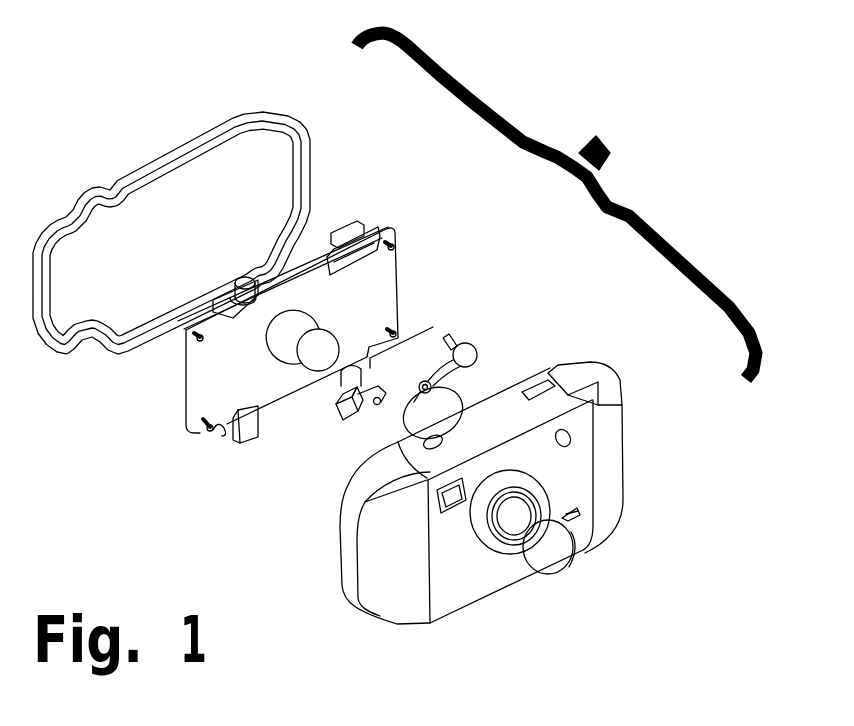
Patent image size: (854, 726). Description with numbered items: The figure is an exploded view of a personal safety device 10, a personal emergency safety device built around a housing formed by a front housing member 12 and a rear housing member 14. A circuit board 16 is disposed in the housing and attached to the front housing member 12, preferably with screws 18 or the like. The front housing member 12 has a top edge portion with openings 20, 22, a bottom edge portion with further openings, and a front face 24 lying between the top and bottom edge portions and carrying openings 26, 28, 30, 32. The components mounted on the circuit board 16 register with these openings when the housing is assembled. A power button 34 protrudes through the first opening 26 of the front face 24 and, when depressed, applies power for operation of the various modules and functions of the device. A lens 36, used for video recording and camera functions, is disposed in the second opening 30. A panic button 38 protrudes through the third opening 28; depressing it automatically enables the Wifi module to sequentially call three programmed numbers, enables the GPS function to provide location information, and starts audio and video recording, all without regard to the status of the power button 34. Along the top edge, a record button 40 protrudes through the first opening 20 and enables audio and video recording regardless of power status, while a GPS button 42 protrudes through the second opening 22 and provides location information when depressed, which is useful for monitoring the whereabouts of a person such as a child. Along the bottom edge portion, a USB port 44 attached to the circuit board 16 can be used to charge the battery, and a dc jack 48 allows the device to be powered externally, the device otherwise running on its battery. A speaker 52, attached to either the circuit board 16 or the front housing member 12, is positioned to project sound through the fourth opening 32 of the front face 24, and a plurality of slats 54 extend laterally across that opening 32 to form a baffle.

The personal safety device 10 is at (412, 246).
The front housing member 12 is at (503, 590).
The rear housing member 14 is at (117, 180).
The circuit board 16 is at (200, 387).
The screws 18 is at (200, 433).
The first opening in top edge portion 20 is at (370, 472).
The second opening in top edge portion 22 is at (617, 383).
The front face 24 is at (447, 580).
The first opening in front face 26 is at (573, 437).
The third opening in front face 28 is at (372, 531).
The second opening in front face 30 is at (542, 484).
The fourth opening in front face 32 is at (587, 507).
The power button 34 is at (477, 352).
The lens 36 is at (578, 556).
The panic button 38 is at (347, 428).
The record button 40 is at (235, 282).
The GPS button 42 is at (350, 223).
The USB port 44 is at (240, 447).
The dc jack 48 is at (436, 326).
The speaker 52 is at (462, 402).
The slats 54 is at (581, 511).